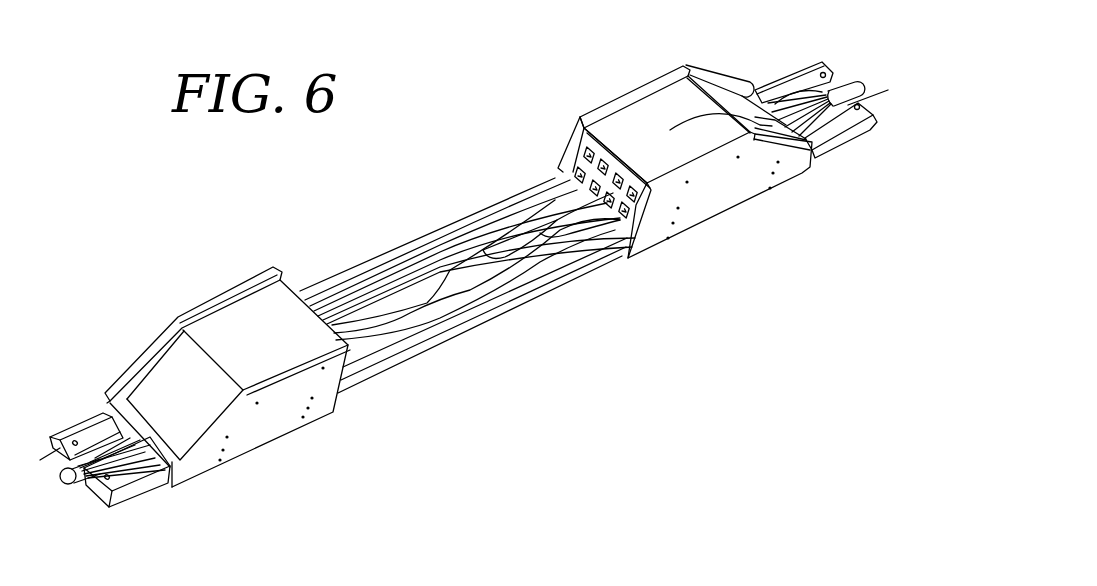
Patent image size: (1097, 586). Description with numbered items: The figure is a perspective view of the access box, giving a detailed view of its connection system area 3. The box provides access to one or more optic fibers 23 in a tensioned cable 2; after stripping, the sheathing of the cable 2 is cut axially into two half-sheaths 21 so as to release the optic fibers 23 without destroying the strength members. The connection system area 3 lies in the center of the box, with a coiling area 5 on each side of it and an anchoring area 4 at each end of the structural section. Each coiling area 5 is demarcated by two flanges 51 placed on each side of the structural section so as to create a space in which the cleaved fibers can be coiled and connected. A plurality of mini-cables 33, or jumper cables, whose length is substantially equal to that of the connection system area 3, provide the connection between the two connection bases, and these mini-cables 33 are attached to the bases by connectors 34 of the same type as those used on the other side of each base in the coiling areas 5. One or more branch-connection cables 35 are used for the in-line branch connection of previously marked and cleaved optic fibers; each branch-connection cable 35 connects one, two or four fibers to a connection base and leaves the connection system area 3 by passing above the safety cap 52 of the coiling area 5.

The tensioned cable 2 is at (63, 481).
The connection system area 3 is at (420, 210).
The anchoring area 4 is at (110, 530).
The coiling area 5 is at (645, 60).
The half-sheath 21 is at (98, 428).
The optic fibers 23 is at (142, 463).
The mini-cables 33 is at (498, 297).
The connectors 34 is at (580, 158).
The branch-connection cables 35 is at (165, 364).
The flange 51 is at (717, 202).
The safety cap 52 is at (710, 97).